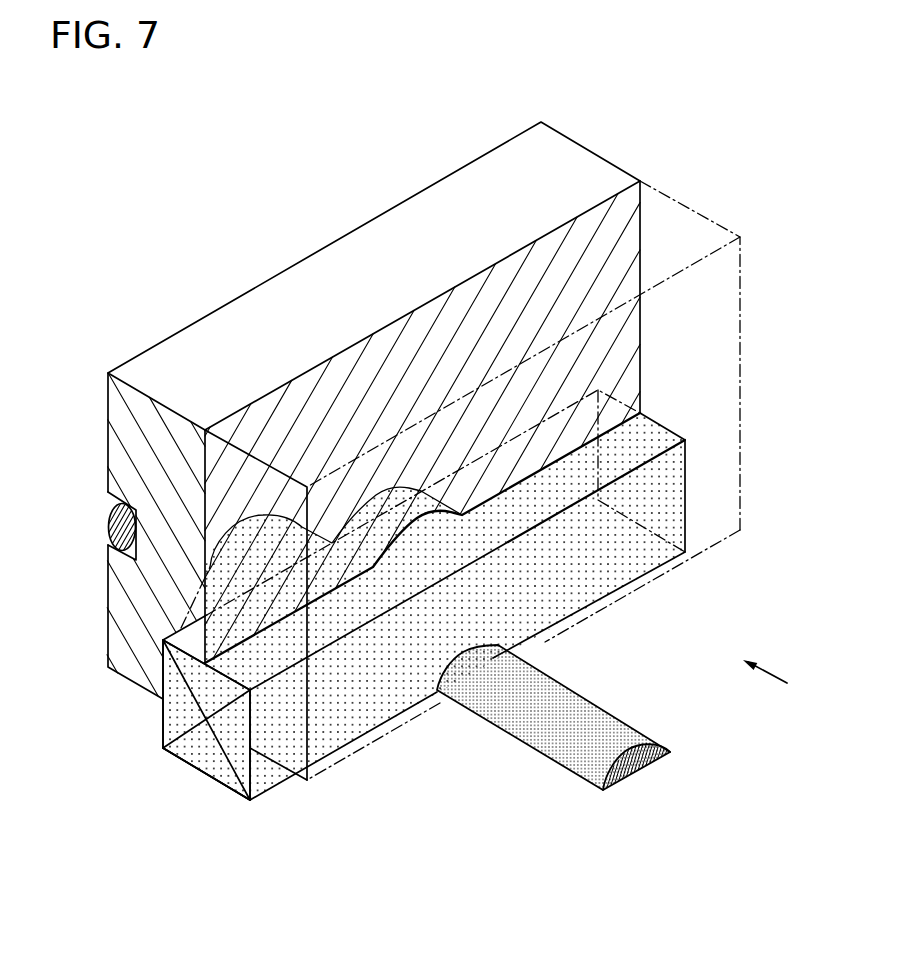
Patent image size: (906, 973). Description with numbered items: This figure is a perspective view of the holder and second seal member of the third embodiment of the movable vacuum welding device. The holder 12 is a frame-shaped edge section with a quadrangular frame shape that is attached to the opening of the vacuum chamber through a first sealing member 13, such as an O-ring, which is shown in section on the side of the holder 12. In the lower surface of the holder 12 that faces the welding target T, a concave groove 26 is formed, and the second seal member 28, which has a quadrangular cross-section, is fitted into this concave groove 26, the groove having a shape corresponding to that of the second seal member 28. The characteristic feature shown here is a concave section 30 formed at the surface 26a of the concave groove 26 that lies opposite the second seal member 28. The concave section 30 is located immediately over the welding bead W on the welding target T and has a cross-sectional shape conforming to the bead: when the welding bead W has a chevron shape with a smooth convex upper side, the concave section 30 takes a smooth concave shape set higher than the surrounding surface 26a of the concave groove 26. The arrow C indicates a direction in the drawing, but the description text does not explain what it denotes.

The holder 12 is at (328, 262).
The first sealing member 13 is at (112, 525).
The concave groove 26 is at (162, 717).
The surface of the concave groove 26a is at (176, 664).
The second seal member 28 is at (207, 756).
The concave section 30 is at (403, 537).
The welding target T is at (653, 633).
The welding bead W is at (600, 717).
The feed direction C is at (773, 682).